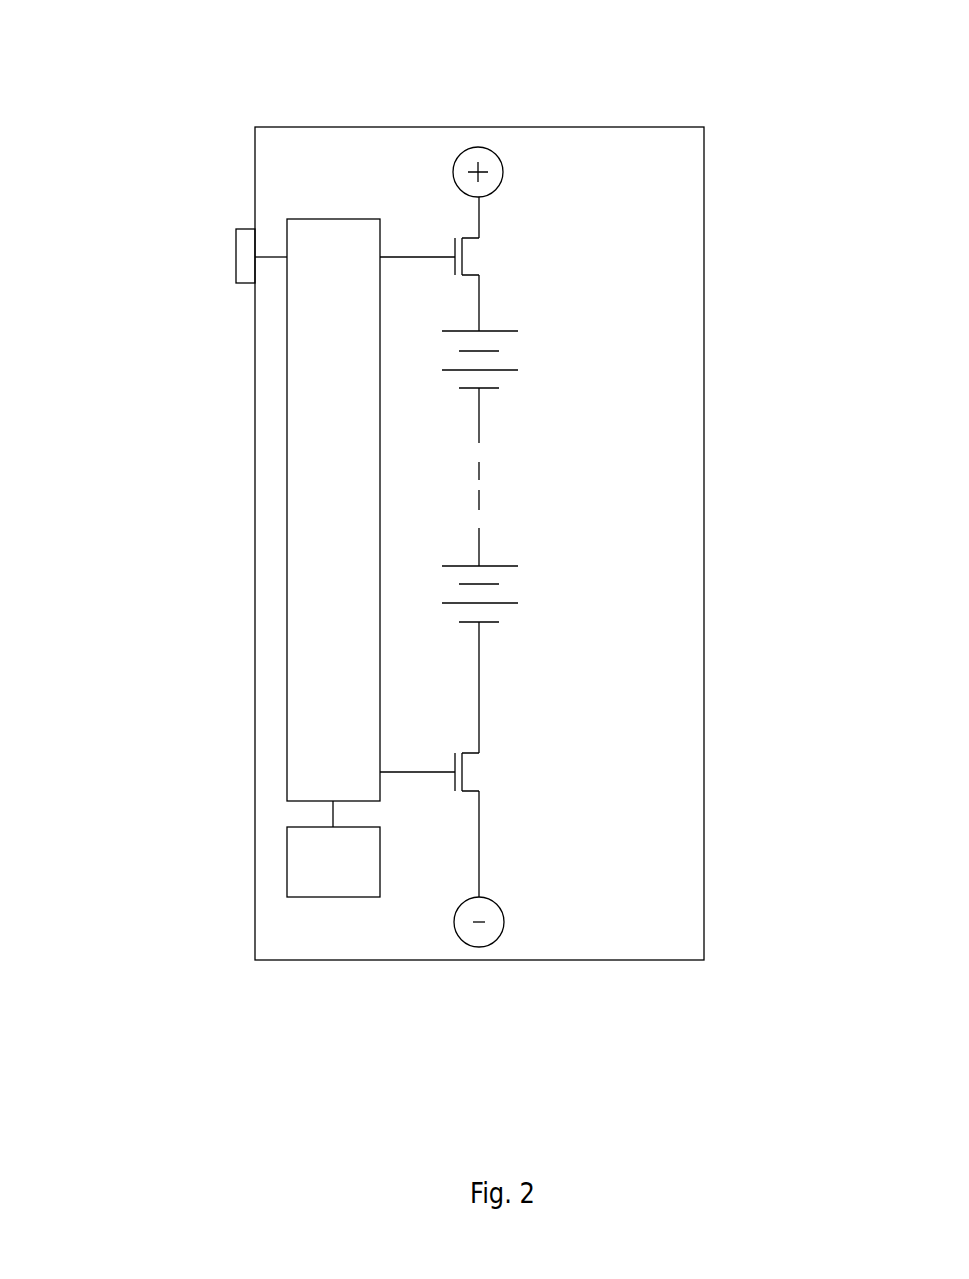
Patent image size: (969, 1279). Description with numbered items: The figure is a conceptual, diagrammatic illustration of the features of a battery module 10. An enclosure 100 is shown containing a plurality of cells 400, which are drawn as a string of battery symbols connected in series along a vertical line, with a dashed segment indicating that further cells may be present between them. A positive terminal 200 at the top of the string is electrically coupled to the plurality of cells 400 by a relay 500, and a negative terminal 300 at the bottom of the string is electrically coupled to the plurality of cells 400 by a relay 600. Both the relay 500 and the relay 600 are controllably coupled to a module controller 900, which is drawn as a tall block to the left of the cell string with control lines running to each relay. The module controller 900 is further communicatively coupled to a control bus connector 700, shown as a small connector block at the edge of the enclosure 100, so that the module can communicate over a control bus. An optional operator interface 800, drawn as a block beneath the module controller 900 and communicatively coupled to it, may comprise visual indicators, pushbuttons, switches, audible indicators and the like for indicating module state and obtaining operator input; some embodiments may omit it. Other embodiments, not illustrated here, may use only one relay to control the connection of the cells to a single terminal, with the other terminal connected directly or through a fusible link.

The battery module 10 is at (648, 127).
The enclosure 100 is at (630, 772).
The positive terminal 200 is at (471, 148).
The negative terminal 300 is at (483, 946).
The cells 400 is at (522, 336).
The relay 500 is at (447, 215).
The relay 600 is at (450, 803).
The control bus connector 700 is at (236, 257).
The operator interface 800 is at (287, 862).
The module controller 900 is at (324, 670).